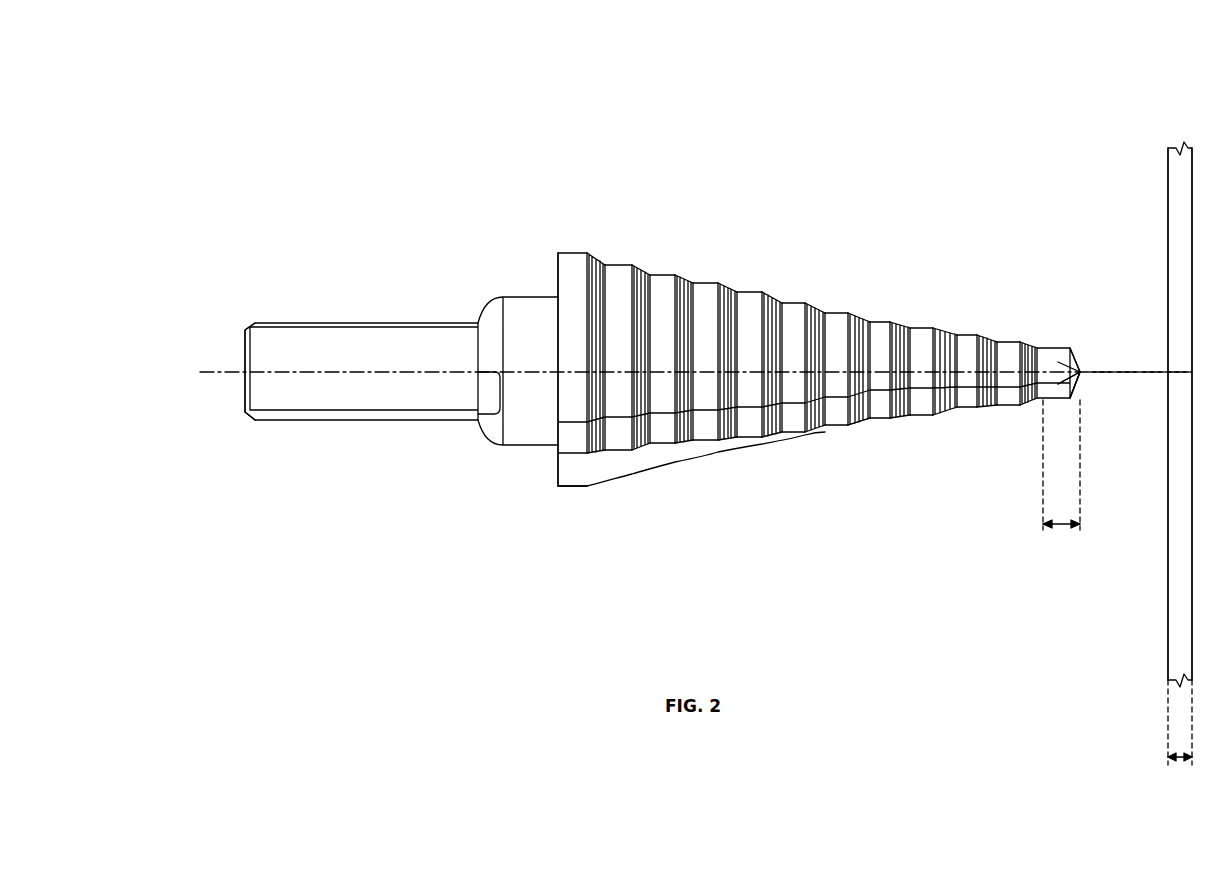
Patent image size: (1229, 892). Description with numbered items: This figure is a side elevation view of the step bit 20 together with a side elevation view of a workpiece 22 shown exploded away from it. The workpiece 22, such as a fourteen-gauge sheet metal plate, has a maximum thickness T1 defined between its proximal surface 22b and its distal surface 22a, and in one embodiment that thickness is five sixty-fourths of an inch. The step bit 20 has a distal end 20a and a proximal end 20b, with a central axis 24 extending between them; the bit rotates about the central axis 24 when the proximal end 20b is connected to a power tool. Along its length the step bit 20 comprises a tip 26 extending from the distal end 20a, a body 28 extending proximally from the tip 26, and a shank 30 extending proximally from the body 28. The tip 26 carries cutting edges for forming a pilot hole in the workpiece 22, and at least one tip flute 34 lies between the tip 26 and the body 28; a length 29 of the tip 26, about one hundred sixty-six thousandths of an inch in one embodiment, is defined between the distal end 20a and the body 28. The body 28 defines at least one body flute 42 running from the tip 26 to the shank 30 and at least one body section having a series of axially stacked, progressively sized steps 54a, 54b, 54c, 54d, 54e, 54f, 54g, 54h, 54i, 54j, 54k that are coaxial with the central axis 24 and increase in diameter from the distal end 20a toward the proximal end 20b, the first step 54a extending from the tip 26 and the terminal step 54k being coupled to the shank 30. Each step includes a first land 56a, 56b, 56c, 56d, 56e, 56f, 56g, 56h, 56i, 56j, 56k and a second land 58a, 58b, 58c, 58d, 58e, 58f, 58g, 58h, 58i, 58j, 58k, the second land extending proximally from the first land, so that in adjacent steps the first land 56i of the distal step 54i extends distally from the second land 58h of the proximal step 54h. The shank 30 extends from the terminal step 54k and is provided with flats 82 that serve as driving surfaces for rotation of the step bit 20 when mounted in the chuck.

The step bit 20 is at (876, 176).
The distal end 20a is at (1082, 375).
The proximal end 20b is at (246, 385).
The workpiece 22 is at (1168, 172).
The distal surface 22a is at (1192, 160).
The proximal surface 22b is at (1168, 215).
The central axis 24 is at (1115, 371).
The tip 26 is at (1075, 392).
The body 28 is at (877, 427).
The length of tip 29 is at (1062, 528).
The shank 30 is at (371, 420).
The tip flute 34 is at (1060, 364).
The body flute 42 is at (672, 449).
The flats 82 is at (440, 397).
The first step 54a is at (995, 407).
The step 54b is at (965, 410).
The step 54c is at (920, 419).
The step 54d is at (867, 422).
The step 54e is at (830, 435).
The step 54f is at (790, 425).
The step 54g is at (745, 433).
The step 54h is at (703, 432).
The step 54i is at (660, 437).
The step 54j is at (615, 442).
The terminal step 54k is at (565, 448).
The first land 56a is at (1038, 350).
The first land 56b is at (990, 340).
The first land 56c is at (945, 333).
The first land 56d is at (898, 326).
The first land 56e is at (860, 319).
The first land 56f is at (815, 309).
The first land 56g is at (775, 302).
The first land 56h is at (727, 290).
The first land 56i is at (677, 276).
The first land 56j is at (637, 266).
The first land 56k is at (597, 257).
The second land 58a is at (1020, 345).
The second land 58b is at (985, 337).
The second land 58c is at (925, 329).
The second land 58d is at (881, 322).
The second land 58e is at (836, 313).
The second land 58f is at (800, 303).
The second land 58g is at (757, 295).
The second land 58h is at (710, 285).
The second land 58i is at (667, 272).
The second land 58j is at (620, 263).
The second land 58k is at (565, 272).
The maximum thickness T1 is at (1182, 760).